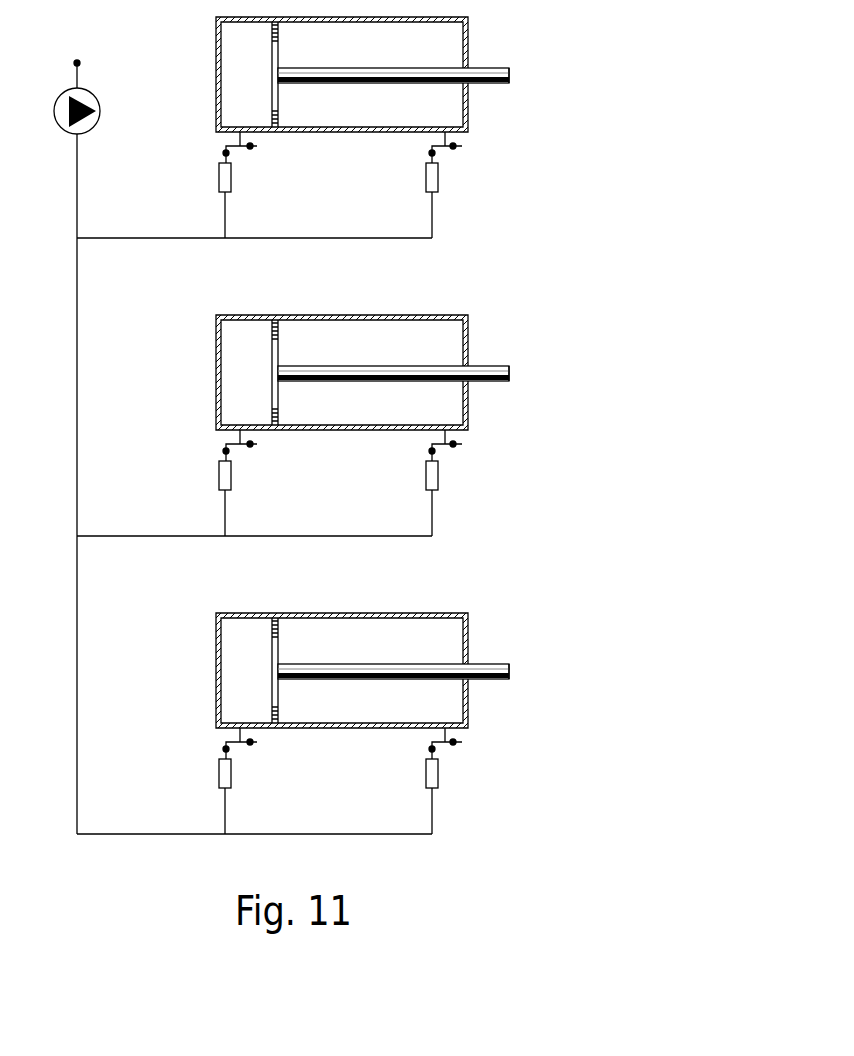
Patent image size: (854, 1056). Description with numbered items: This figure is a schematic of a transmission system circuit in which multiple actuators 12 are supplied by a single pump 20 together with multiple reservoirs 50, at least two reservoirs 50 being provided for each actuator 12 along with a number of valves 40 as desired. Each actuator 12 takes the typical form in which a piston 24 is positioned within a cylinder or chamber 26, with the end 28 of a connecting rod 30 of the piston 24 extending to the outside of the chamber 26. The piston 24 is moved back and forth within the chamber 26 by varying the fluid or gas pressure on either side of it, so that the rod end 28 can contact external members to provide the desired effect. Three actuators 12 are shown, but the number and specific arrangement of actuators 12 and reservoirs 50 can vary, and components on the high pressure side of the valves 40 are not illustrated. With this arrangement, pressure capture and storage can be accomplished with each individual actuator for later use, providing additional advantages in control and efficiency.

The actuator 12 is at (385, 372).
The pump 20 is at (59, 128).
The piston 24 is at (272, 88).
The chamber 26 is at (461, 100).
The rod end 28 is at (509, 72).
The connecting rod 30 is at (402, 84).
The valve 40 is at (226, 153).
The reservoir 50 is at (219, 176).